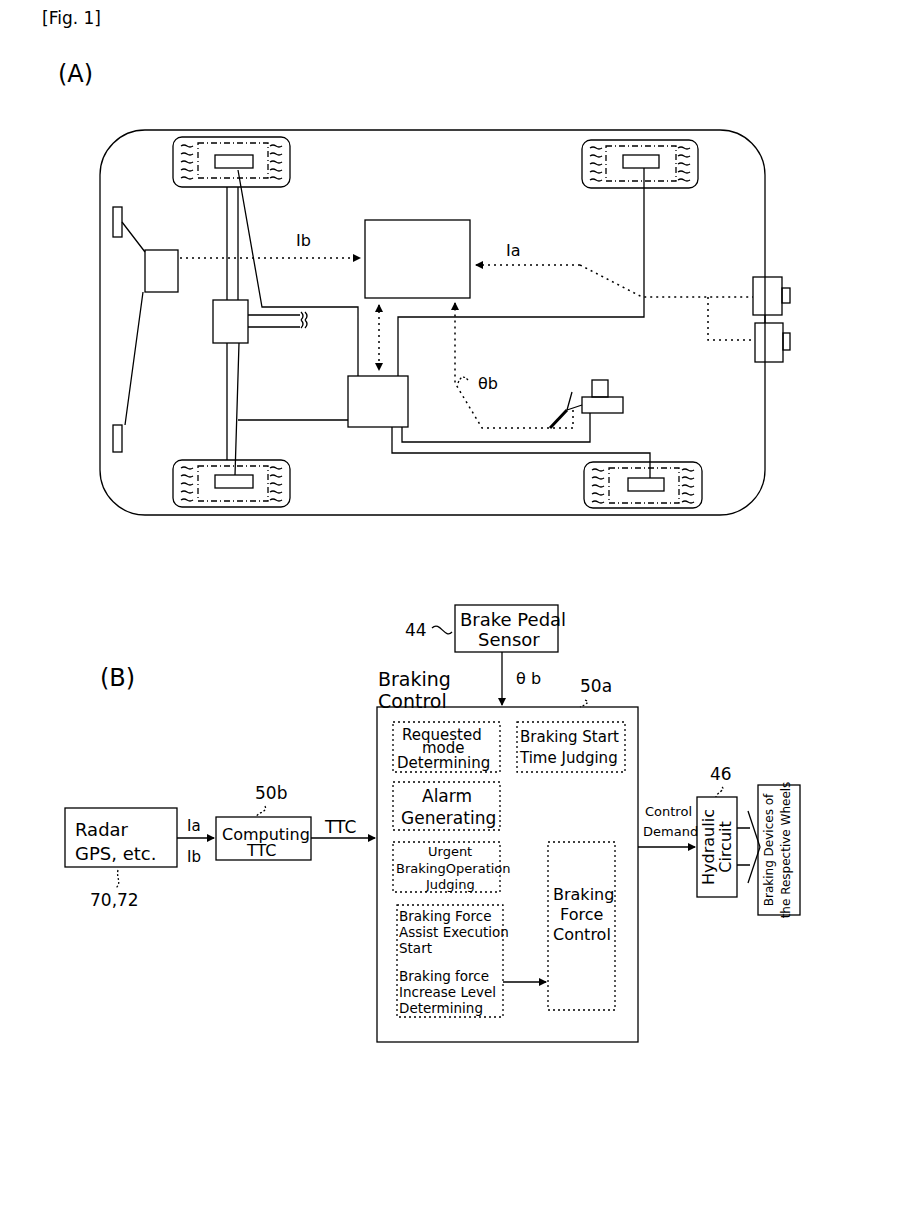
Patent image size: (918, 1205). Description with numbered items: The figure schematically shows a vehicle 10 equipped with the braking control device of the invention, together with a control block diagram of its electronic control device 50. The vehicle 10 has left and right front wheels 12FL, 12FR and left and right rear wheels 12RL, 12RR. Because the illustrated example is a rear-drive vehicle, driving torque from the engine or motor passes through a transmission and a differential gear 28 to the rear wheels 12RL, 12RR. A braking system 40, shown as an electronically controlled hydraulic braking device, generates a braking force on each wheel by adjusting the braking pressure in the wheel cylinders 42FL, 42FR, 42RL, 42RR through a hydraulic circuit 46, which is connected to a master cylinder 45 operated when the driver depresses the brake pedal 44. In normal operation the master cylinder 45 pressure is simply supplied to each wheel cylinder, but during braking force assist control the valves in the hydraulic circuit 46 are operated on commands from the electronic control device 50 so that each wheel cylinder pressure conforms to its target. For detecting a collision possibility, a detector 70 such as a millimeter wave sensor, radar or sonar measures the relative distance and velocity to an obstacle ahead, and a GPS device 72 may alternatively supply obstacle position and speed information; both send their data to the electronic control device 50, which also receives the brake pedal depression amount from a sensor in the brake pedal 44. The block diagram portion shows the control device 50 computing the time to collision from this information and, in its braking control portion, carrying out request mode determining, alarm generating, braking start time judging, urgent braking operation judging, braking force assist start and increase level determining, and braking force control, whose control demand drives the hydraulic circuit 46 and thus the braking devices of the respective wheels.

The vehicle 10 is at (485, 124).
The left rear wheel 12RL is at (172, 158).
The left front wheel 12FL is at (675, 142).
The right rear wheel 12RR is at (173, 496).
The right front wheel 12FR is at (700, 492).
The wheel cylinder 42RL is at (238, 155).
The wheel cylinder 42FL is at (637, 153).
The wheel cylinder 42RR is at (234, 490).
The wheel cylinder 42FR is at (650, 492).
The differential gear 28 is at (260, 331).
The braking system 40 is at (373, 433).
The hydraulic circuit 46 is at (378, 366).
The electronic control device 50 is at (417, 259).
The GPS device 72 is at (145, 329).
The detector 70 is at (803, 311).
The brake pedal 44 is at (548, 427).
The master cylinder 45 is at (603, 413).